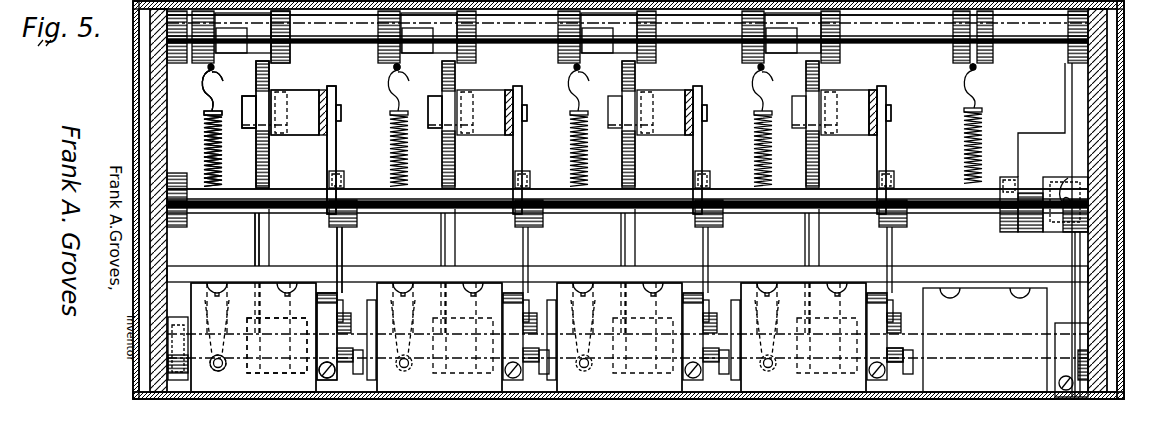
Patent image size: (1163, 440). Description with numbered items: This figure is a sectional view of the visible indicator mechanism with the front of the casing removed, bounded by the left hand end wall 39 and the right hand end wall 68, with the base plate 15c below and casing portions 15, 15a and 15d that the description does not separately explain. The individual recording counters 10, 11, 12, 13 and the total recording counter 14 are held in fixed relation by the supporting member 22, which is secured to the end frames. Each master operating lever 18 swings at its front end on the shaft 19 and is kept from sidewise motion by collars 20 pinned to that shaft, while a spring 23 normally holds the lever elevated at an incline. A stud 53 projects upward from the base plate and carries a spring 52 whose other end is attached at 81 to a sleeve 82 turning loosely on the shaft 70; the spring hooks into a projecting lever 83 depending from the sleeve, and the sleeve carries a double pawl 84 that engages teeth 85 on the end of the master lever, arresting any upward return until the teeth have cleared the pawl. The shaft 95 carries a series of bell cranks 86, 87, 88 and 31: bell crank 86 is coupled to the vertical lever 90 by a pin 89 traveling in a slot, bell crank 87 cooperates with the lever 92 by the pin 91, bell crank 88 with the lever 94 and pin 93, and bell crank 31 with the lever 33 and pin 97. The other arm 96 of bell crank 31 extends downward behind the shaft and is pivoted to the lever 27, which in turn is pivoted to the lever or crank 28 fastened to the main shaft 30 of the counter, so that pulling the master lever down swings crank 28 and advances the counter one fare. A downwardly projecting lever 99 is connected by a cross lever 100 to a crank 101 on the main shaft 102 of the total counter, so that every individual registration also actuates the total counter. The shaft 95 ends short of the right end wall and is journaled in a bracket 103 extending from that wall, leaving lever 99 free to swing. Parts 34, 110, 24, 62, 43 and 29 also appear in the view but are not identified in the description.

The double pawl 84 is at (262, 45).
The projecting lever 83 is at (207, 67).
The sleeve 82 is at (225, 79).
The teeth 85 is at (262, 78).
The lever 33 is at (329, 86).
The shaft 70 is at (394, 68).
The spring attachment point 81 is at (204, 91).
The pin 97 is at (342, 110).
The lever arm of bell crank 96 is at (245, 105).
The nut block 34 is at (283, 118).
The spring 52 is at (204, 126).
The block 110 is at (252, 132).
The spring 23 is at (269, 148).
The bell crank 31 is at (327, 158).
The left hand end wall 39 is at (150, 63).
The casing part 15a is at (136, 84).
The casing 15 is at (134, 101).
The base plate 15c is at (177, 138).
The casing part 15d is at (1118, 101).
The right hand end wall 68 is at (1105, 80).
The lever 94 is at (509, 90).
The block 24 is at (428, 101).
The bell crank 88 is at (513, 153).
The pin 93 is at (528, 113).
The shaft 95 is at (483, 196).
The lever 92 is at (692, 88).
The pin 91 is at (708, 113).
The bell crank 87 is at (694, 161).
The vertical lever 90 is at (870, 90).
The pin 89 is at (892, 113).
The bell crank 86 is at (877, 164).
The spring 62 is at (982, 131).
The bracket 103 is at (1070, 110).
The cross lever 100 is at (1074, 251).
The hook 43 is at (1066, 180).
The downwardly projecting lever 99 is at (1088, 190).
The master operating lever 18 is at (256, 240).
The lever or crank 28 is at (328, 292).
The individual recording counter 10 is at (297, 290).
The individual recording counter 11 is at (473, 290).
The individual recording counter 12 is at (652, 290).
The individual recording counter 13 is at (832, 290).
The lever 27 is at (343, 246).
The main shaft of the counter 30 is at (177, 317).
The stud 53 is at (222, 340).
The collars 20 is at (296, 320).
The screw 29 is at (339, 373).
The shaft 19 is at (371, 319).
The supporting member 22 is at (930, 268).
The total recording counter 14 is at (978, 290).
The main shaft of the total counter 102 is at (915, 355).
The crank 101 is at (1055, 328).